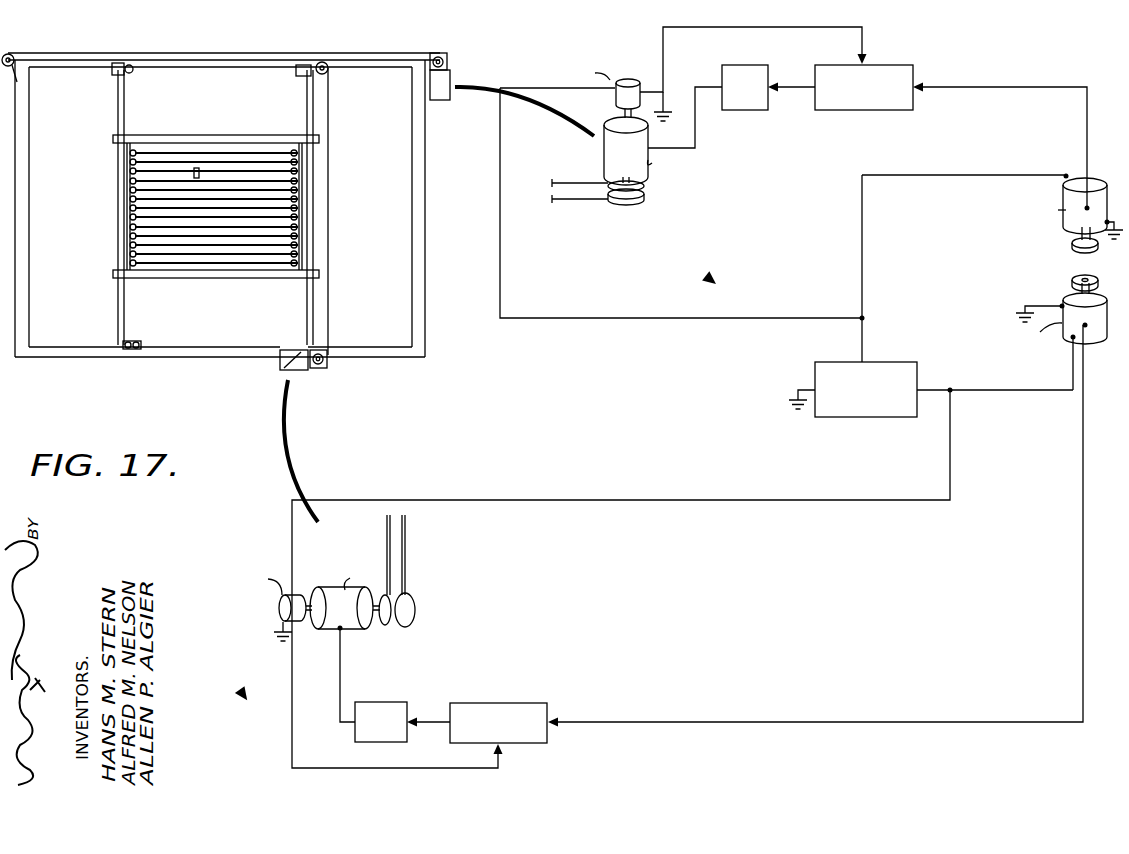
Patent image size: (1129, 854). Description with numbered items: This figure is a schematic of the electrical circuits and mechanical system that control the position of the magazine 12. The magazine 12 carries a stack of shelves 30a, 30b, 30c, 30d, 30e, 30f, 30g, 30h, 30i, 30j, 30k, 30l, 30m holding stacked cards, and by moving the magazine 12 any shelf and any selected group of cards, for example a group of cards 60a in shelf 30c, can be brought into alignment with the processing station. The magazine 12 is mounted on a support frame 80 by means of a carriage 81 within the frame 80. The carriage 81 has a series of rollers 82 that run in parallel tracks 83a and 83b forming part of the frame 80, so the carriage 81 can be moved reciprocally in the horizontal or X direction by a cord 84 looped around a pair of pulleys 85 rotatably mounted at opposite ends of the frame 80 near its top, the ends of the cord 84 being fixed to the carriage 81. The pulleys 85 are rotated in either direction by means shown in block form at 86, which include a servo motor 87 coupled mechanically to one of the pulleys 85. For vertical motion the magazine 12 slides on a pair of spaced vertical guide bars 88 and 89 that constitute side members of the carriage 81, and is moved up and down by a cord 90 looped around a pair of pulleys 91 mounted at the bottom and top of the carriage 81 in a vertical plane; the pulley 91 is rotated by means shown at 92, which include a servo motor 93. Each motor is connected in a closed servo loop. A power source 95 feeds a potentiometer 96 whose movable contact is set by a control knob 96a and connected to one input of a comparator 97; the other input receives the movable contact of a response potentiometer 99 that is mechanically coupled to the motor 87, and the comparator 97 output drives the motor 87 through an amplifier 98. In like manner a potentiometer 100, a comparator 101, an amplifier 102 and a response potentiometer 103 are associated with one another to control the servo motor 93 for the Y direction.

The magazine 12 is at (240, 145).
The shelf 30a is at (150, 154).
The shelf 30b is at (148, 163).
The shelf 30c is at (148, 171).
The shelf 30d is at (214, 181).
The shelf 30e is at (214, 190).
The shelf 30f is at (214, 199).
The shelf 30g is at (148, 210).
The memory plane 30h is at (214, 217).
The memory plane 30i is at (146, 230).
The memory plane 30j is at (214, 236).
The memory plane 30k is at (214, 245).
The memory plane 30l is at (214, 254).
The memory plane 30m is at (146, 262).
The group of cards 60a is at (197, 168).
The support frame 80 is at (385, 286).
The carriage 81 is at (316, 221).
The rollers 82 is at (148, 50).
The track 83a is at (205, 352).
The track 83b is at (210, 63).
The cord 84 is at (356, 56).
The pulleys 85 is at (10, 60).
The pulley rotating means 86 is at (440, 100).
The servo motor 87 is at (605, 148).
The guide bar 88 is at (118, 105).
The guide bar 89 is at (307, 98).
The cord 90 is at (328, 132).
The pulleys 91 is at (326, 75).
The pulley rotating means 92 is at (298, 368).
The servo motor 93 is at (325, 629).
The power source 95 is at (853, 417).
The potentiometer 96 is at (1062, 194).
The control knob 96a is at (1072, 244).
The comparator 97 is at (886, 66).
The amplifier 98 is at (762, 52).
The response potentiometer 99 is at (620, 95).
The potentiometer 100 is at (1094, 330).
The comparator 101 is at (482, 703).
The amplifier 102 is at (378, 702).
The potentiometer 103 is at (281, 608).